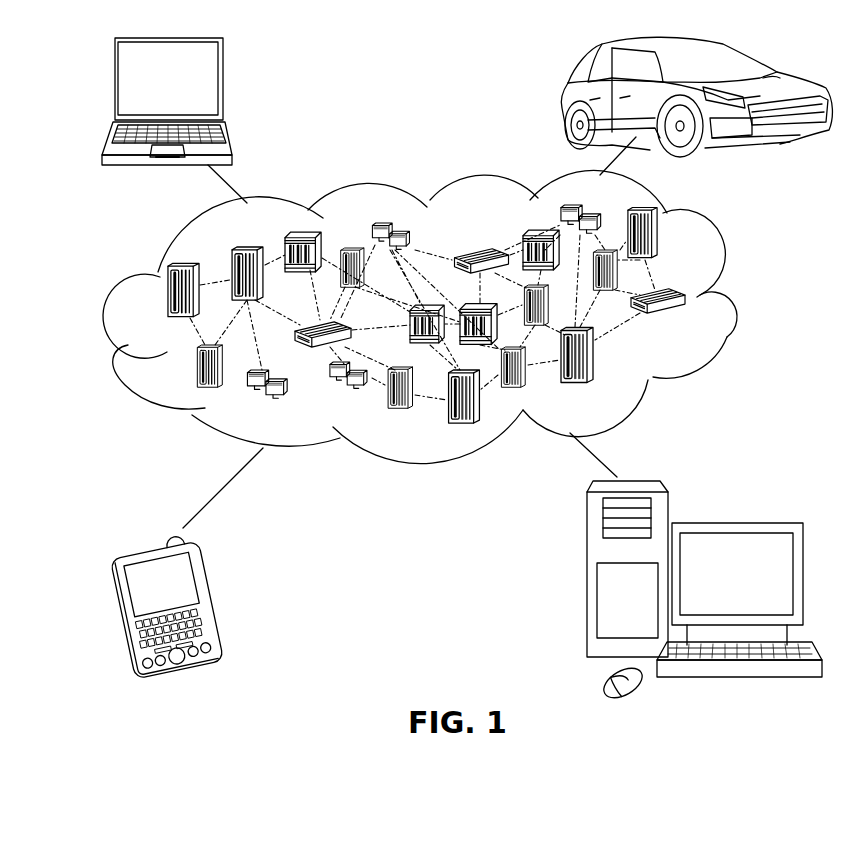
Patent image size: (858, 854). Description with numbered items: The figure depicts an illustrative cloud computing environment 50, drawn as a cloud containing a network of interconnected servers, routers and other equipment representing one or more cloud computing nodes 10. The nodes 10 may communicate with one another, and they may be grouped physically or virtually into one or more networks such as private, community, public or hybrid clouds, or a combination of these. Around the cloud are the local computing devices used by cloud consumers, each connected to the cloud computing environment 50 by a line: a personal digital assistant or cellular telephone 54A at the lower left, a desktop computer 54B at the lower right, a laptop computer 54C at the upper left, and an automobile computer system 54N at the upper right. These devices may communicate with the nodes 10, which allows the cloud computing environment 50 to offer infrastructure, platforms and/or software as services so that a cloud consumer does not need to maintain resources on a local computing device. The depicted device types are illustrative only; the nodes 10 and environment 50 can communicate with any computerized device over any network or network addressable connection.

The cloud computing nodes 10 is at (696, 326).
The cloud computing environment 50 is at (733, 300).
The personal digital assistant or cellular telephone 54A is at (212, 596).
The desktop computer 54B is at (736, 522).
The laptop computer 54C is at (222, 84).
The automobile computer system 54N is at (566, 100).